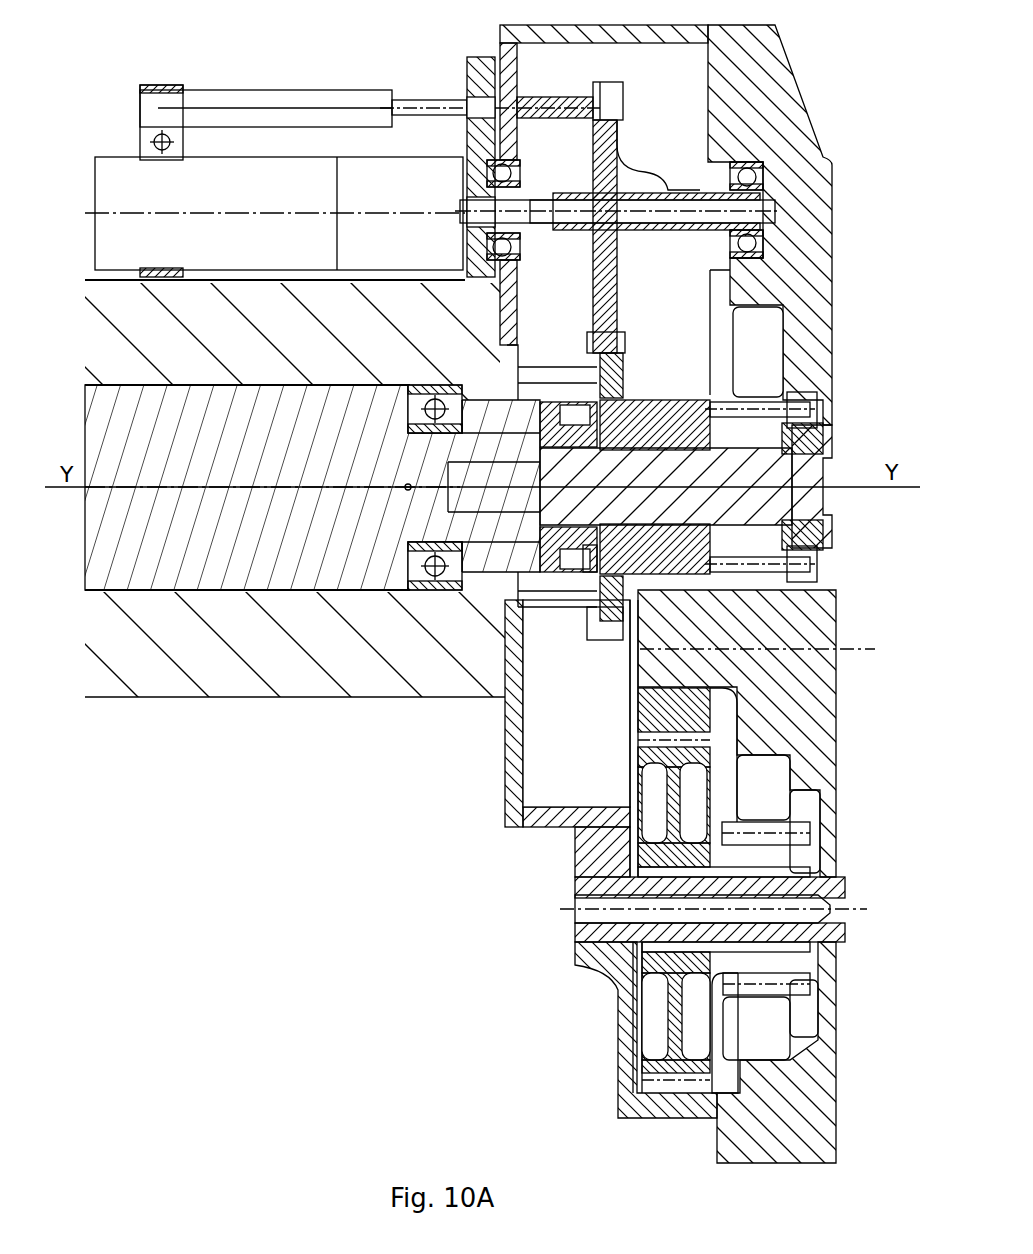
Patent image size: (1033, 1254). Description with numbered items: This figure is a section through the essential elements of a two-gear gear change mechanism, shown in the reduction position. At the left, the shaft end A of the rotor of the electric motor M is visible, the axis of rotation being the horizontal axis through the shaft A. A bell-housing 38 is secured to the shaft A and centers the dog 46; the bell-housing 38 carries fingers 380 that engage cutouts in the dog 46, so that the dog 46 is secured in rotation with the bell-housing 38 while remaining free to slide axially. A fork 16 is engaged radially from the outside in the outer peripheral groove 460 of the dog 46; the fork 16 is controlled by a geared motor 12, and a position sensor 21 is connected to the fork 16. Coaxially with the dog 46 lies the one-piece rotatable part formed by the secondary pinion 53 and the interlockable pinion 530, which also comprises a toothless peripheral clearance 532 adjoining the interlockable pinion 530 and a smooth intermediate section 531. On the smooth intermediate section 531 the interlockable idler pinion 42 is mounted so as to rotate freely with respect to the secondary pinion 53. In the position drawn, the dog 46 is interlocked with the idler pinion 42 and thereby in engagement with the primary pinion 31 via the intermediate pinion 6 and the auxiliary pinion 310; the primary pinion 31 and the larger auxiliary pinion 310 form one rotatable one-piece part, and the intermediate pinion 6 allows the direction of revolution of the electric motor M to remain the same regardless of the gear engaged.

The geared motor 12 is at (137, 187).
The position sensor 21 is at (262, 110).
The fork 16 is at (647, 182).
The dog 46 is at (623, 365).
The interlockable idler pinion 42 is at (677, 433).
The smooth intermediate section 531 is at (727, 385).
The secondary pinion 53 is at (815, 386).
The bell-housing 38 is at (482, 538).
The interlockable pinion 530 is at (557, 560).
The fingers 380 is at (568, 597).
The peripheral clearance 532 is at (587, 555).
The outer peripheral groove 460 is at (610, 600).
The intermediate pinion 6 is at (665, 708).
The primary pinion 31 is at (788, 973).
The auxiliary pinion 310 is at (670, 1070).
The electric motor M is at (204, 672).
The shaft end A is at (502, 570).